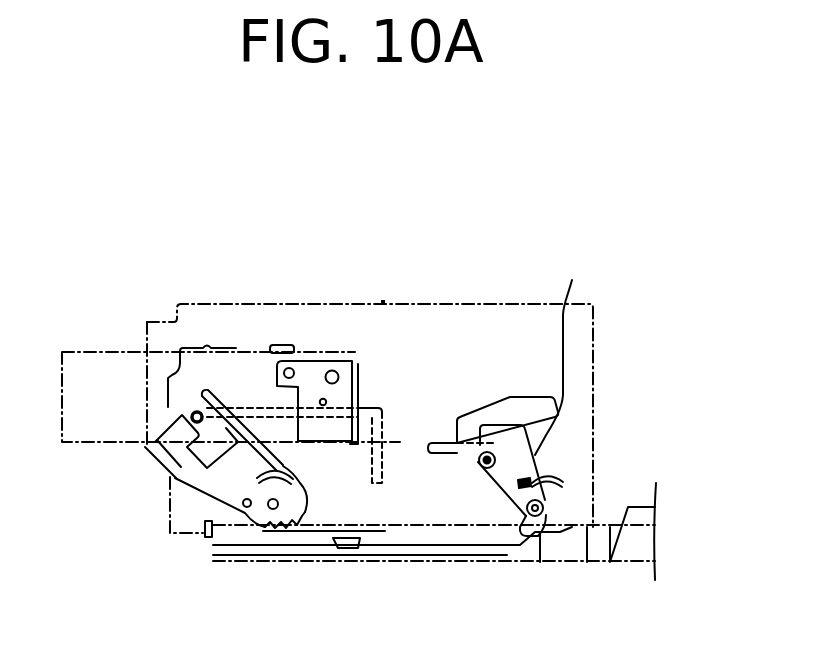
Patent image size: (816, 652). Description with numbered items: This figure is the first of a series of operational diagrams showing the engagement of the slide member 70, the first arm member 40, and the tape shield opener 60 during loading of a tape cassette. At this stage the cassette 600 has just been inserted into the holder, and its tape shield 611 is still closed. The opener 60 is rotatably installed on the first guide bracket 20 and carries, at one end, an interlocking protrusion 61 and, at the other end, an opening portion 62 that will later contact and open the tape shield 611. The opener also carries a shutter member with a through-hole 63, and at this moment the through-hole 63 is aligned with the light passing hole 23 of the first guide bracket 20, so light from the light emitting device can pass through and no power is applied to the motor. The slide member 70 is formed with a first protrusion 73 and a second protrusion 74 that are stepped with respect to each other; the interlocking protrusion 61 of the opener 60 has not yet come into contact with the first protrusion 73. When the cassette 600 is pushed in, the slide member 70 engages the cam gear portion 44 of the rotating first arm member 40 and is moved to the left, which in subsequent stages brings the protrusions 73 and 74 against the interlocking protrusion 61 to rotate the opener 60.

The first guide bracket 20 is at (480, 306).
The cassette 600 is at (112, 352).
The tape shield 611 is at (310, 368).
The first arm member 40 is at (185, 467).
The cam gear portion 44 is at (310, 528).
The tape shield opener 60 is at (540, 440).
The opening portion 62 is at (564, 351).
The light passing hole 23 is at (481, 452).
The through-hole 63 is at (492, 455).
The interlocking protrusion 61 is at (520, 512).
The slide member 70 is at (431, 560).
The first protrusion 73 is at (540, 562).
The second protrusion 74 is at (590, 562).